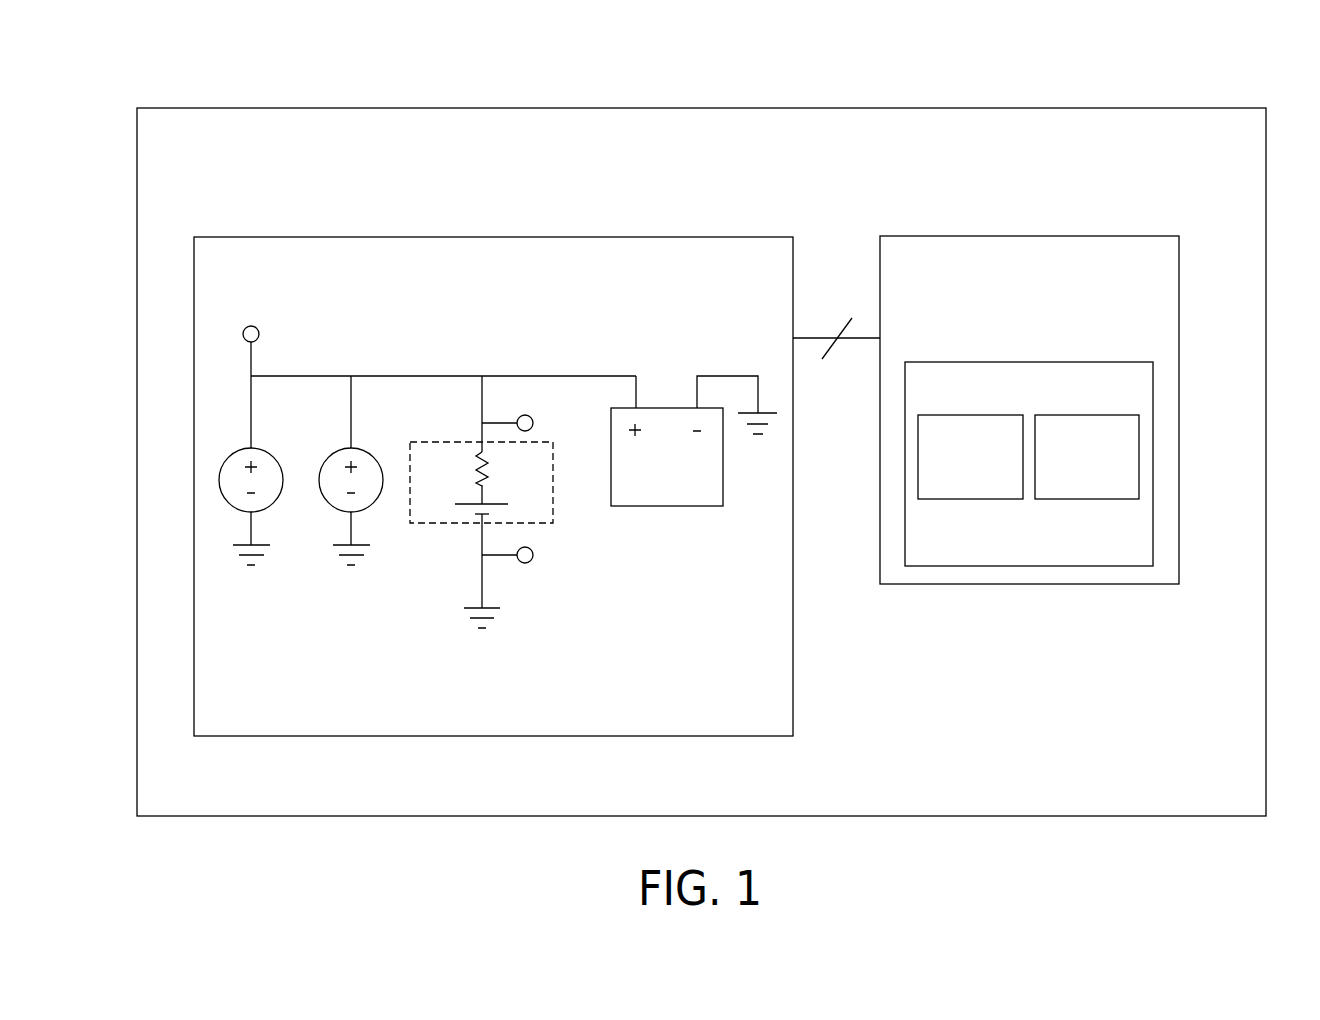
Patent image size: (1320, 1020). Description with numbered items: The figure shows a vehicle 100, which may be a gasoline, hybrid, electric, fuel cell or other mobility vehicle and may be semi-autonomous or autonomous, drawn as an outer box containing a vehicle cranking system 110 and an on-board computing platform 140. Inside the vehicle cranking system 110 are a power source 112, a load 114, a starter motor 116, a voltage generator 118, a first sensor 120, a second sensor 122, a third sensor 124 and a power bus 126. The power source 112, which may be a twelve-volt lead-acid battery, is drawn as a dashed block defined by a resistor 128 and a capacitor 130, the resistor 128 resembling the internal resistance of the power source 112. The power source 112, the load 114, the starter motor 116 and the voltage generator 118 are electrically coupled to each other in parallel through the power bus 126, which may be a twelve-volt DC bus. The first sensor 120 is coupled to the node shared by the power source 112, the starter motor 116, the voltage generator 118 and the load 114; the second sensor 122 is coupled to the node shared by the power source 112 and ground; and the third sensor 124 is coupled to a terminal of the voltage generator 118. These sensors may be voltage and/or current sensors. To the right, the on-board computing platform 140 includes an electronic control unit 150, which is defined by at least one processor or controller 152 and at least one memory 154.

The vehicle 100 is at (1105, 108).
The vehicle cranking system 110 is at (493, 237).
The power source 112 is at (521, 497).
The load 114 is at (673, 506).
The starter motor 116 is at (370, 507).
The voltage generator 118 is at (270, 507).
The first sensor 120 is at (533, 422).
The second sensor 122 is at (527, 563).
The third sensor 124 is at (259, 332).
The power bus 126 is at (428, 376).
The resistor 128 is at (490, 462).
The capacitor 130 is at (468, 504).
The on-board computing platform 140 is at (1031, 236).
The electronic control unit 150 is at (1026, 362).
The processor or controller 152 is at (970, 499).
The memory 154 is at (1086, 499).